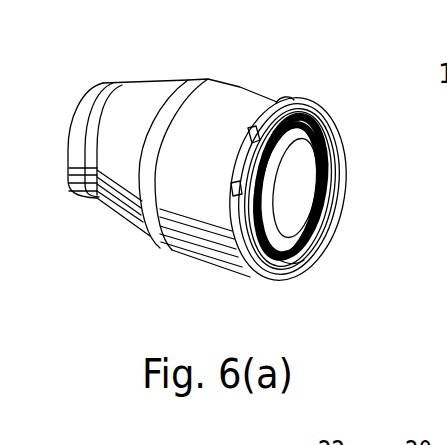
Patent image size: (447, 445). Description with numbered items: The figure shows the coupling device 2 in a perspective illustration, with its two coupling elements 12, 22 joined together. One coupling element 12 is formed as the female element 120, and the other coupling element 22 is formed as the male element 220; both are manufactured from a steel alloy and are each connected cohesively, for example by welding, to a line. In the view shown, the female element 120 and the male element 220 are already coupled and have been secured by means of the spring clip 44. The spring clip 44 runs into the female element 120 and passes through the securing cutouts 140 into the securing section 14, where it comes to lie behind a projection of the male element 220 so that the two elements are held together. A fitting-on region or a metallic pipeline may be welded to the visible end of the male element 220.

The coupling device 2 is at (323, 81).
The coupling element 12 is at (121, 198).
The securing section 14 is at (282, 263).
The coupling element 22 is at (304, 186).
The spring clip 44 is at (271, 109).
The female element 120 is at (197, 225).
The securing cutouts 140 is at (328, 136).
The male element 220 is at (288, 229).